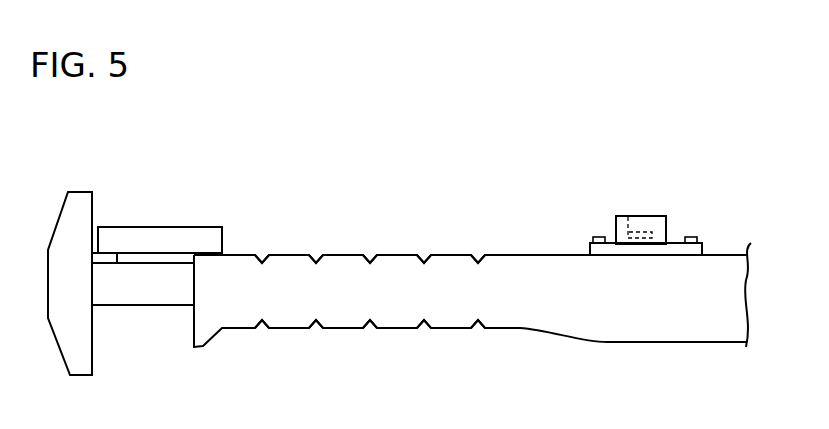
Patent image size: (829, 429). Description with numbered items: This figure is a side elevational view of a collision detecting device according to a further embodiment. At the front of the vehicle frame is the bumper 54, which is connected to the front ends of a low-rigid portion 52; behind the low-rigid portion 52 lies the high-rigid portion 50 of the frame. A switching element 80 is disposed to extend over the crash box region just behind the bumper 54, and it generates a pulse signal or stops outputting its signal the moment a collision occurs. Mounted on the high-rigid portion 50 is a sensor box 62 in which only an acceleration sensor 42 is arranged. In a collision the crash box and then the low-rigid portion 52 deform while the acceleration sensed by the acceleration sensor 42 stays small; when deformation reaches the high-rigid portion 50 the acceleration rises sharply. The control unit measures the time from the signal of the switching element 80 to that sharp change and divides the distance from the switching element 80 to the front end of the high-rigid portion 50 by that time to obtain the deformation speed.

The acceleration sensor 42 is at (632, 212).
The high-rigid portion 50 is at (672, 330).
The low-rigid portion 52 is at (397, 309).
The bumper 54 is at (76, 200).
The sensor box 62 is at (666, 222).
The switching element 80 is at (172, 232).